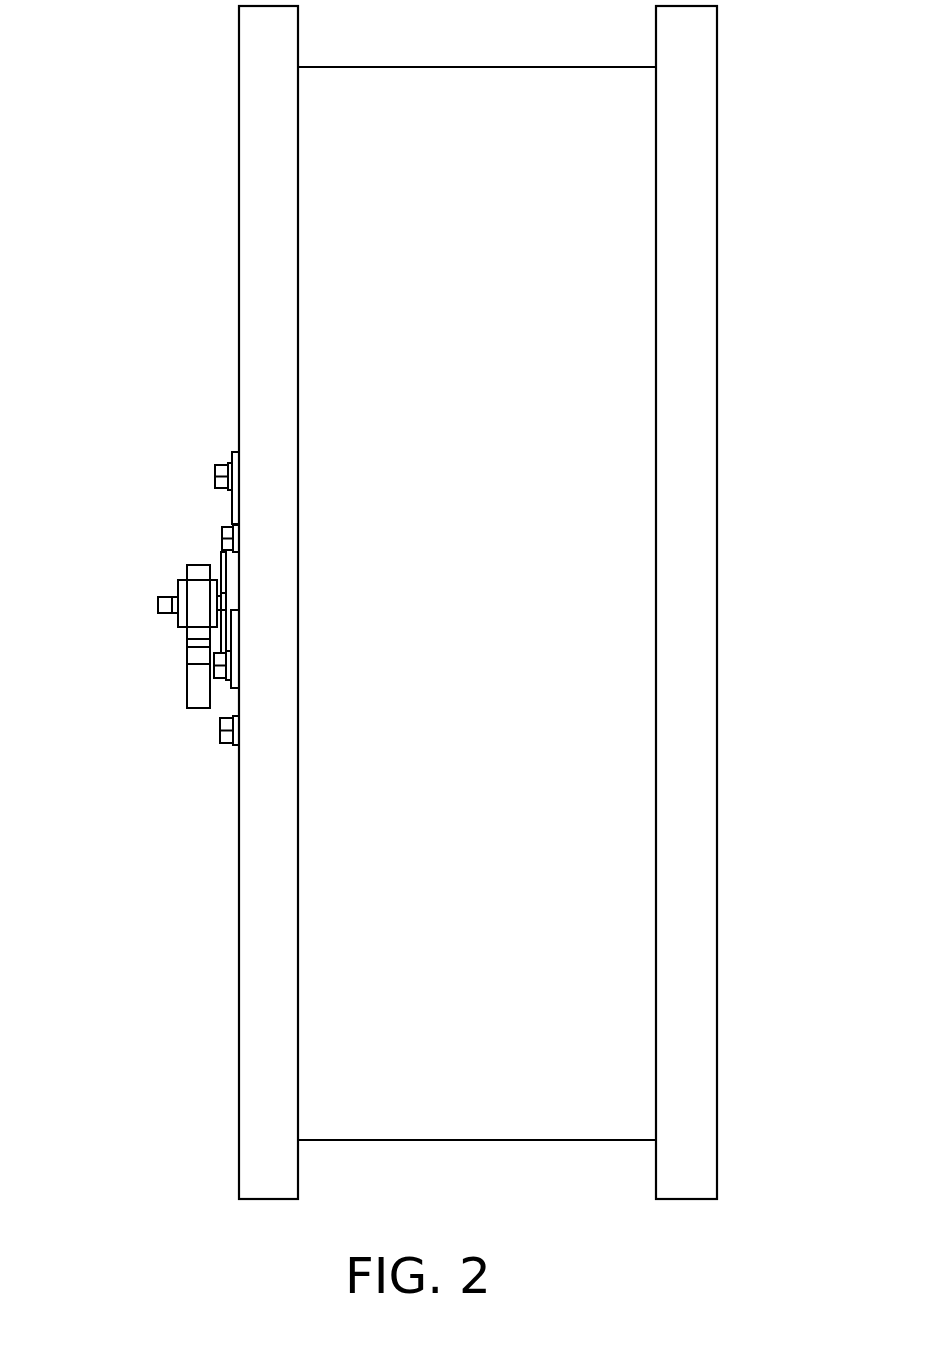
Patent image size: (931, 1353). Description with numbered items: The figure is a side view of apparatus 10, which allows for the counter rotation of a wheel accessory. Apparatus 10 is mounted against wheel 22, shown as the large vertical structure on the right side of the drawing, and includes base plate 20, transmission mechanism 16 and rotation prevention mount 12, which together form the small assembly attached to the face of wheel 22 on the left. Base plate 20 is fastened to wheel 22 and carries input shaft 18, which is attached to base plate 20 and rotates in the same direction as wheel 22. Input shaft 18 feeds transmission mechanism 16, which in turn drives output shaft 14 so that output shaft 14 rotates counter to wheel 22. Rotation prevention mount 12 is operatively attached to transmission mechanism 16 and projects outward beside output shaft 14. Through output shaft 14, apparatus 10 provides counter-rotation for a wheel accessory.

The apparatus 10 is at (175, 242).
The rotation prevention mount 12 is at (184, 695).
The output shaft 14 is at (157, 602).
The transmission mechanism 16 is at (218, 580).
The input shaft 18 is at (227, 590).
The base plate 20 is at (237, 620).
The wheel 22 is at (688, 265).